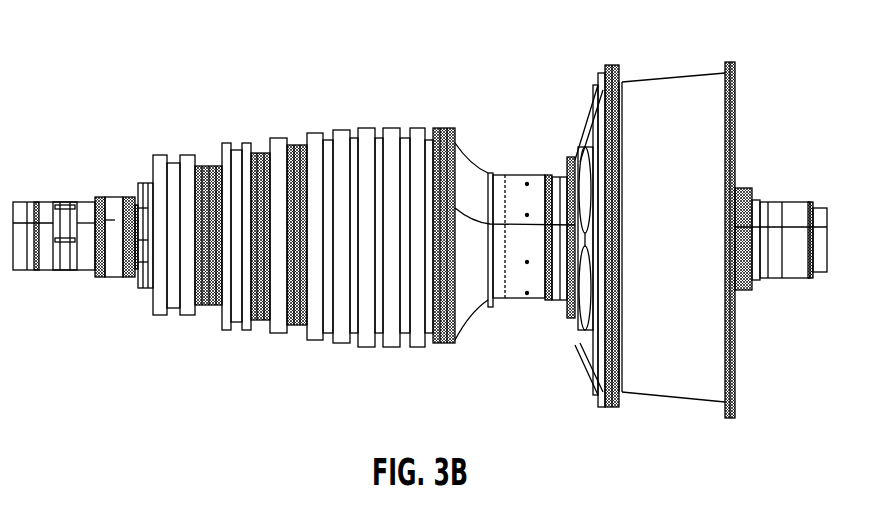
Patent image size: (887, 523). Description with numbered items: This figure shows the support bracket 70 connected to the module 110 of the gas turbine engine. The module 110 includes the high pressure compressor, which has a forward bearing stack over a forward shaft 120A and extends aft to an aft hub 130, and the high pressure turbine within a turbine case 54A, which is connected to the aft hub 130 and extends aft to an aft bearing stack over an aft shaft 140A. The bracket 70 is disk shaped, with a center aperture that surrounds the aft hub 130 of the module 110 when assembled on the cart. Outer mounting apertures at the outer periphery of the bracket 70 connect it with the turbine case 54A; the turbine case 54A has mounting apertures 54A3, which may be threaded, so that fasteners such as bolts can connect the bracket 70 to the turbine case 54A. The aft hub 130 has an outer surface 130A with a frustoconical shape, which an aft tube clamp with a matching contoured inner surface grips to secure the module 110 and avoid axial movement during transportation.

The module 110 is at (290, 81).
The forward shaft 120A is at (34, 202).
The outer surface 130A is at (466, 176).
The aft hub 130 is at (513, 178).
The bracket 70 is at (598, 85).
The mounting apertures 54A3 is at (616, 66).
The turbine case 54A is at (706, 77).
The aft shaft 140A is at (823, 205).